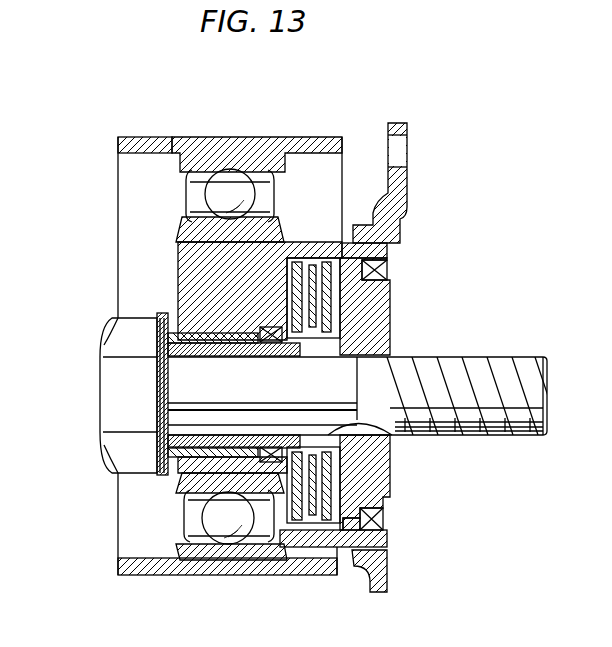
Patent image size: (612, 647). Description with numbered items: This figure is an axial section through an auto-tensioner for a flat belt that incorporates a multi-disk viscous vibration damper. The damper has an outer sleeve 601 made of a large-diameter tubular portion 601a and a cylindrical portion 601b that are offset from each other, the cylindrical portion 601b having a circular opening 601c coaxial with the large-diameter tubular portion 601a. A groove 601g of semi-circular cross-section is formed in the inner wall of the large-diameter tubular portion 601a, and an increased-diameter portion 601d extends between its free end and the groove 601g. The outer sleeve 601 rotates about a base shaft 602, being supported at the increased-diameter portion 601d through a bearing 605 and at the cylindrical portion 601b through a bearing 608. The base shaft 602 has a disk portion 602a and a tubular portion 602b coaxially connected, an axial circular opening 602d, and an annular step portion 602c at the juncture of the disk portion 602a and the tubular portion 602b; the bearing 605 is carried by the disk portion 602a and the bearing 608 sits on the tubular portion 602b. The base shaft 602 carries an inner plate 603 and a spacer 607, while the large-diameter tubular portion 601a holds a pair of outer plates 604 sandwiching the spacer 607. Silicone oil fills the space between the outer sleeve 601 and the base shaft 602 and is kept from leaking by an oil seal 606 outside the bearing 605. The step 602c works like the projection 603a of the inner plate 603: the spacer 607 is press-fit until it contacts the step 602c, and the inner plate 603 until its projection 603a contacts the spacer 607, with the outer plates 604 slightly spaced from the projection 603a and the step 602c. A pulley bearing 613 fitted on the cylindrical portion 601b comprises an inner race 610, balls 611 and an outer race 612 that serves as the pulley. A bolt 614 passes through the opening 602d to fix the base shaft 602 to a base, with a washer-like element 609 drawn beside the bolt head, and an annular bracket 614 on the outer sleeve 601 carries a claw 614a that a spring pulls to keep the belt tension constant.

The outer sleeve 601 is at (176, 270).
The large-diameter tubular portion 601a is at (320, 250).
The cylindrical portion 601b is at (196, 258).
The circular opening 601c is at (168, 348).
The increased-diameter portion 601d is at (384, 524).
The groove 601g is at (284, 258).
The base shaft 602 is at (394, 316).
The disk portion 602a is at (391, 300).
The tubular portion 602b is at (190, 352).
The annular step portion 602c is at (391, 346).
The axial circular opening 602d is at (388, 422).
The inner plate 603 is at (282, 548).
The projection 603a is at (306, 338).
The outer plates 604 is at (306, 524).
The bearing 605 is at (380, 254).
The oil seal 606 is at (388, 272).
The spacer 607 is at (332, 550).
The bearing 608 is at (248, 302).
The washer 609 is at (168, 478).
The inner race 610 is at (184, 228).
The balls 611 is at (233, 188).
The outer race 612 is at (204, 150).
The pulley bearing 613 is at (118, 175).
The bolt 614 is at (112, 386).
The claw 614a is at (407, 182).